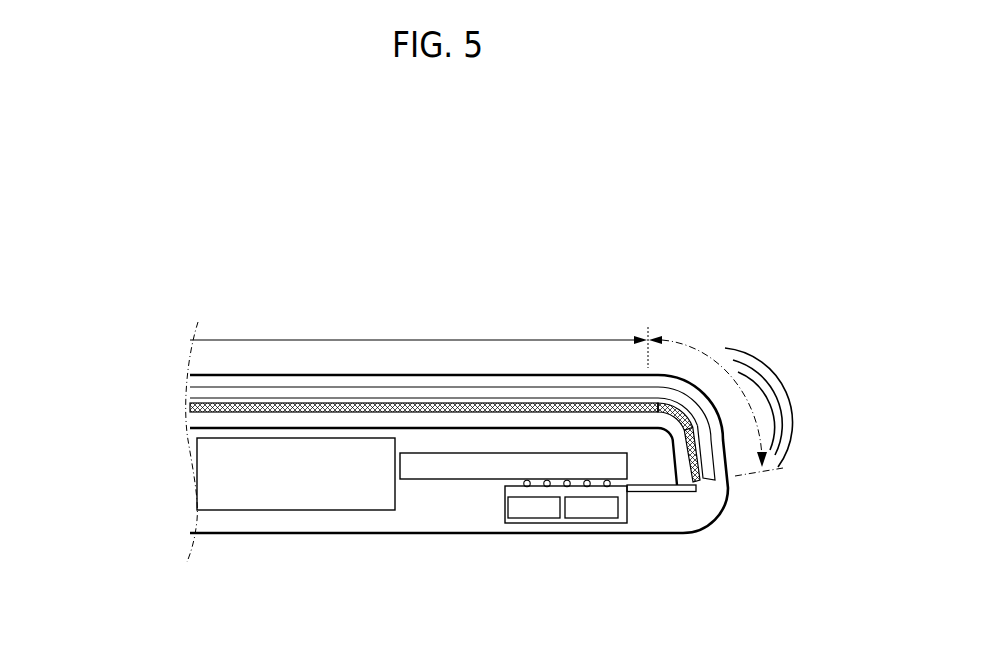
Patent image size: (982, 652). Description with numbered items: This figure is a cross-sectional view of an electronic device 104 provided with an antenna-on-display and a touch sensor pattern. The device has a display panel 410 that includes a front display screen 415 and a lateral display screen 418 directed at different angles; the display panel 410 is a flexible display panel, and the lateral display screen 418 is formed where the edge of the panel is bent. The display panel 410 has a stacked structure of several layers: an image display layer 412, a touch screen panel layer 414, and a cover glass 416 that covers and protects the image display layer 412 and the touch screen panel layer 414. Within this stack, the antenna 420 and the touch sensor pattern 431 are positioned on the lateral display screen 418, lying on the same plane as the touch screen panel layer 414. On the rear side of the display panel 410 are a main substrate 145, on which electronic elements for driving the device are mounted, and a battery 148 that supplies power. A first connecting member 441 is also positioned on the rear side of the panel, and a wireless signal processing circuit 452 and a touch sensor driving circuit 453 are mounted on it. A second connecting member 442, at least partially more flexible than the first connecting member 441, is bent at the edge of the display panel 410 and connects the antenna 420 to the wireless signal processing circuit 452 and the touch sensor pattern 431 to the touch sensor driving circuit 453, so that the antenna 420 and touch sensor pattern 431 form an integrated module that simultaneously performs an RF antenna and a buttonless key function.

The electronic device 104 is at (614, 292).
The front display screen 415 is at (419, 338).
The lateral display screen 418 is at (713, 355).
The touch sensor pattern 431 is at (673, 412).
The display panel 410 is at (392, 433).
The cover glass 416 is at (185, 390).
The touch screen panel layer 414 is at (185, 408).
The image display layer 412 is at (399, 456).
The antenna 420 is at (700, 470).
The battery 148 is at (330, 512).
The main substrate 145 is at (427, 481).
The first connecting member 441 is at (548, 536).
The touch sensor driving circuit 453 is at (535, 522).
The wireless signal processing circuit 452 is at (590, 520).
The second connecting member 442 is at (667, 494).